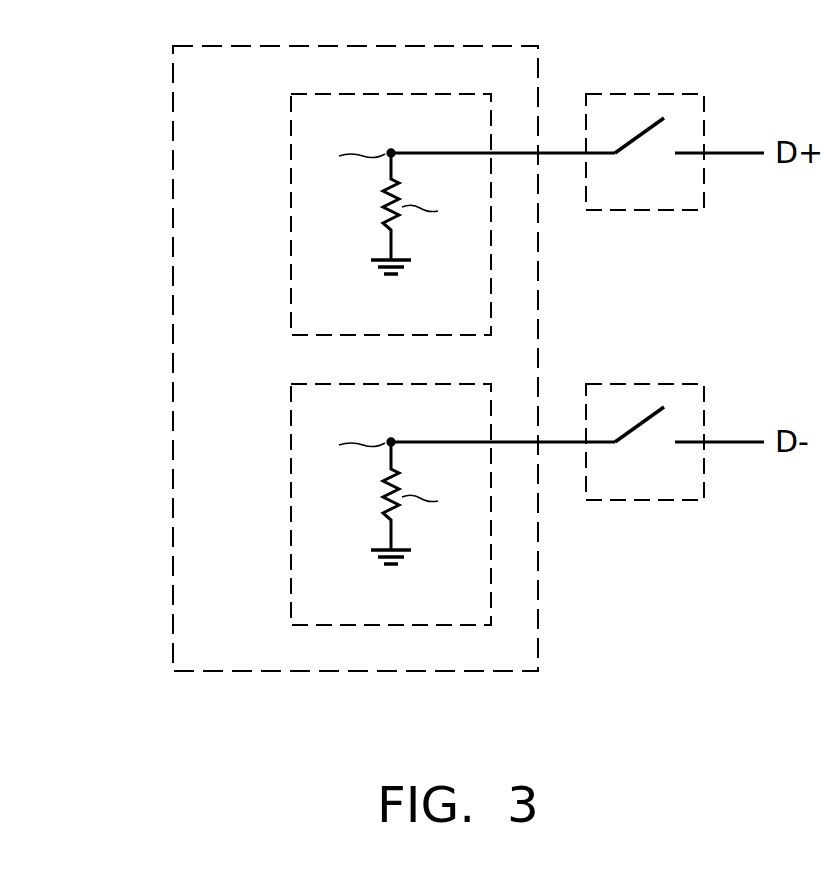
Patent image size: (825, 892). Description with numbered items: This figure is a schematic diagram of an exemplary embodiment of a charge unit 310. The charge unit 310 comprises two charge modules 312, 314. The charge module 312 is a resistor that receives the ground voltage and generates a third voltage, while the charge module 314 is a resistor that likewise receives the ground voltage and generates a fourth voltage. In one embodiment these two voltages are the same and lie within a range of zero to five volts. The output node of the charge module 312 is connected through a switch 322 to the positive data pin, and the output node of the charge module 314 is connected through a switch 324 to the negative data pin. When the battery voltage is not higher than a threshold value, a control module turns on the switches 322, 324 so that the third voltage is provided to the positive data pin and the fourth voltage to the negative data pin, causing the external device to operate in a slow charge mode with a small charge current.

The charge unit 310 is at (171, 360).
The charge module 312 is at (289, 215).
The charge module 314 is at (288, 505).
The switch 322 is at (643, 91).
The switch 324 is at (645, 502).